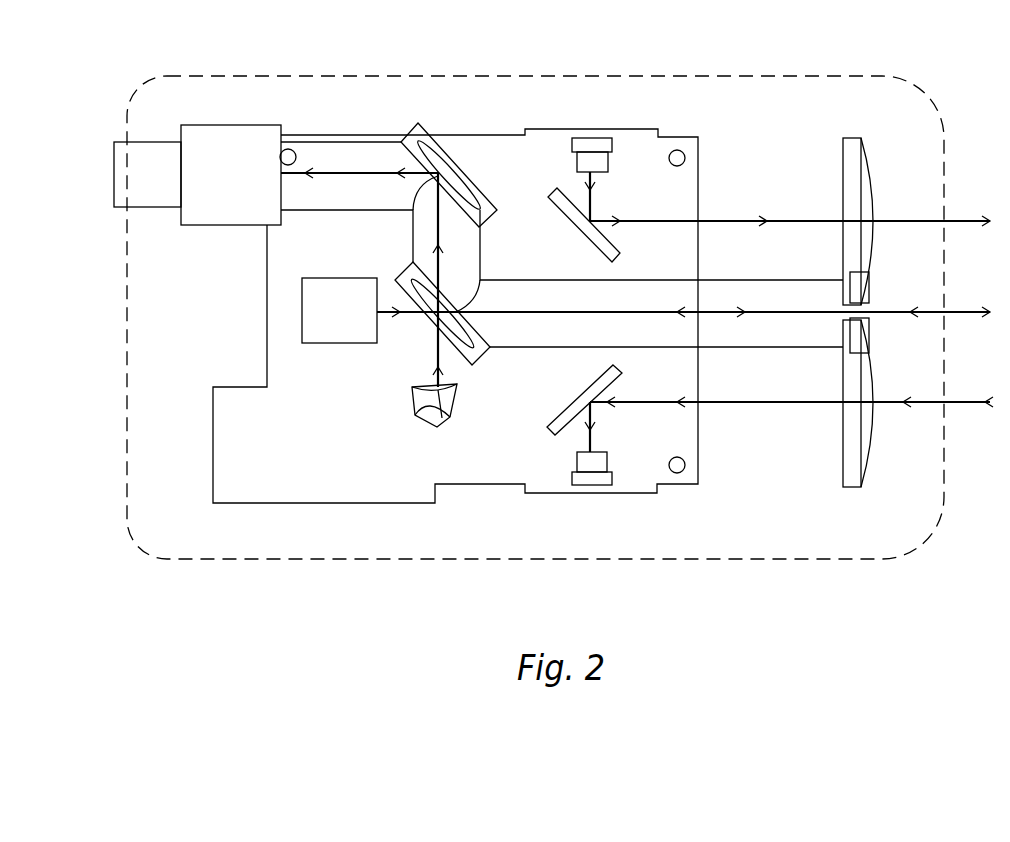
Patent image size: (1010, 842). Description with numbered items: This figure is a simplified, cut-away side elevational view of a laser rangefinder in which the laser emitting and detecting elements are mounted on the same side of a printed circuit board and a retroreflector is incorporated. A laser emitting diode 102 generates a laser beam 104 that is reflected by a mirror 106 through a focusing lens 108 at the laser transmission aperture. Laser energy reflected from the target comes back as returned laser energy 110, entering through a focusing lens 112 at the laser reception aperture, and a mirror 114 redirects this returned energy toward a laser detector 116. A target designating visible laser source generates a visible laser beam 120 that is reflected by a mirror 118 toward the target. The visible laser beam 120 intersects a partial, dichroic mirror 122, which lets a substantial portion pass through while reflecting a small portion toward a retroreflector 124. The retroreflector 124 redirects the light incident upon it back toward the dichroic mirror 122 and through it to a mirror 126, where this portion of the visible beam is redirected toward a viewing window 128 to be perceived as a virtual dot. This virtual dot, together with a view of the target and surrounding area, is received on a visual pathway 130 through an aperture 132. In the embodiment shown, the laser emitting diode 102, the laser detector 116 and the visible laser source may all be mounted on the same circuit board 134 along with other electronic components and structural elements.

The laser emitting diode 102 is at (610, 165).
The laser beam 104 is at (731, 216).
The mirror 106 is at (591, 239).
The focusing lens 108 is at (843, 160).
The returned laser energy 110 is at (958, 410).
The focusing lens 112 is at (843, 458).
The mirror 114 is at (586, 393).
The laser detector 116 is at (577, 463).
The mirror 118 is at (352, 278).
The visible laser beam 120 is at (398, 316).
The partial (dichroic) mirror 122 is at (404, 268).
The retroreflector 124 is at (420, 418).
The mirror 126 is at (475, 184).
The viewing window 128 is at (217, 227).
The visual pathway 130 is at (344, 168).
The aperture 132 is at (870, 290).
The circuit board 134 is at (237, 386).